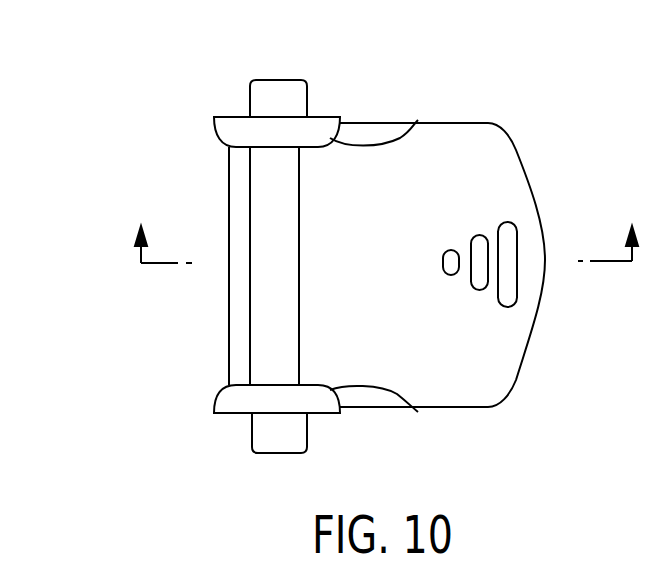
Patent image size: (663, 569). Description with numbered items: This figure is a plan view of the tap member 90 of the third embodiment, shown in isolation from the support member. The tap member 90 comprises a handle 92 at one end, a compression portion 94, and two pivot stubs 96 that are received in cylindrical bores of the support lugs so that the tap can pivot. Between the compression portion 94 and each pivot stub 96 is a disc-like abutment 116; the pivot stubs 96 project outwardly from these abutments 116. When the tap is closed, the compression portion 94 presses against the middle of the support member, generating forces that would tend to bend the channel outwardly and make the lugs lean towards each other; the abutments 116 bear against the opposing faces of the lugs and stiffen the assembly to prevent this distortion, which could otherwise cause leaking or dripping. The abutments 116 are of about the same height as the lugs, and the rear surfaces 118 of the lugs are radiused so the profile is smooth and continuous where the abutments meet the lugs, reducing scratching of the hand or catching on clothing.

The tap member 90 is at (140, 128).
The handle 92 is at (493, 162).
The compression portion 94 is at (238, 285).
The pivot stubs 96 is at (278, 95).
The disc-like abutments 116 is at (337, 118).
The rear surfaces 118 is at (418, 120).